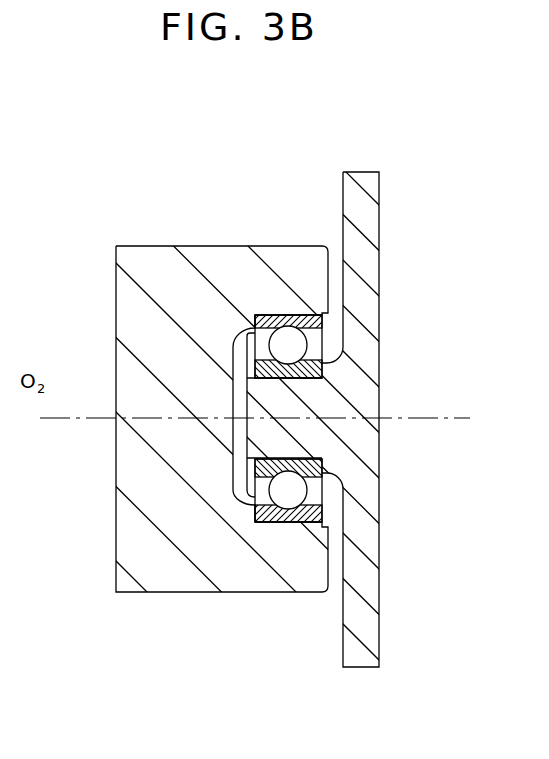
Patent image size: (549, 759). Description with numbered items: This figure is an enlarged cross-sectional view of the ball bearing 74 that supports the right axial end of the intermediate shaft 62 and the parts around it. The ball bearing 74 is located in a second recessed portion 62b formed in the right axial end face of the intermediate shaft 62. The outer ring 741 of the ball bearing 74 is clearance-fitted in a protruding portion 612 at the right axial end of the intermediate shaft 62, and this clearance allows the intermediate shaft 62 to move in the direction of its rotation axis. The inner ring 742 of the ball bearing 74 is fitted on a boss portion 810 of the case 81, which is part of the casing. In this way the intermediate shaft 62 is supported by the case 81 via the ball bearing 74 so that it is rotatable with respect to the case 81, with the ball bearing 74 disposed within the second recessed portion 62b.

The intermediate shaft 62 is at (203, 262).
The protruding portion 612 is at (288, 272).
The second recessed portion 62b is at (258, 522).
The case 81 is at (372, 183).
The boss portion 810 is at (282, 400).
The ball bearing 74 is at (323, 510).
The outer ring 741 is at (323, 316).
The inner ring 742 is at (325, 362).